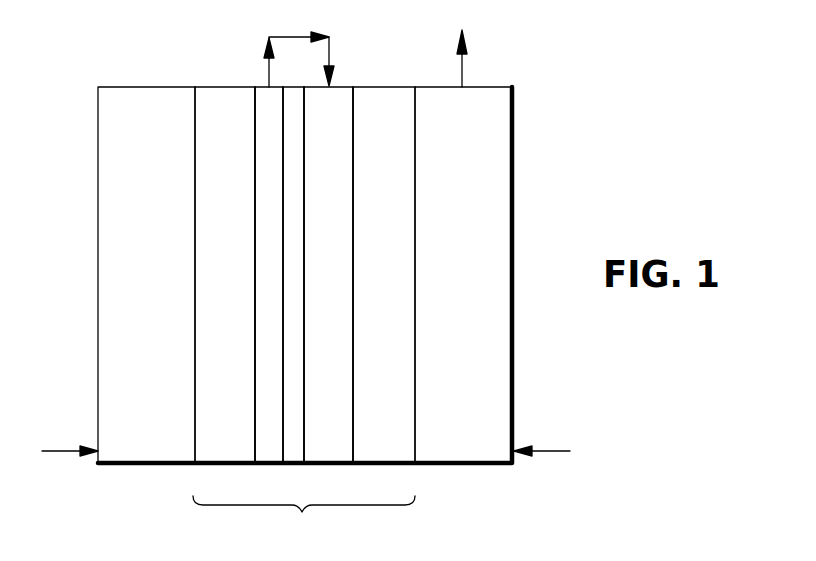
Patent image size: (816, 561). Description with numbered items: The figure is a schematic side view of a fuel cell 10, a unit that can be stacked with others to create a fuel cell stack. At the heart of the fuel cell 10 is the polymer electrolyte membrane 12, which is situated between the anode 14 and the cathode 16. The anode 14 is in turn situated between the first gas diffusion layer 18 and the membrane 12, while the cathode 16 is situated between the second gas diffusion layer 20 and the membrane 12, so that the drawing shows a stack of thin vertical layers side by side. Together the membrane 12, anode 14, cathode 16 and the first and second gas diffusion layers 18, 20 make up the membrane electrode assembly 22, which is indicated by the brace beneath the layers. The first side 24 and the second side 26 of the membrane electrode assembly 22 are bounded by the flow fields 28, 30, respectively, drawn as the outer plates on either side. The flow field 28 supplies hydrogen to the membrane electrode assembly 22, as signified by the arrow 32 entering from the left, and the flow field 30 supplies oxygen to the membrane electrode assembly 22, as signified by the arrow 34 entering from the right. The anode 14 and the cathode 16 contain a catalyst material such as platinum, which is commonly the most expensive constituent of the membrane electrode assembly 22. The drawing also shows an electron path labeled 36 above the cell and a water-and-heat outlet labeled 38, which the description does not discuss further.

The fuel cell 10 is at (563, 218).
The polymer electrolyte membrane 12 is at (288, 86).
The anode 14 is at (268, 467).
The cathode 16 is at (328, 467).
The first gas diffusion layer 18 is at (224, 86).
The second gas diffusion layer 20 is at (385, 86).
The membrane electrode assembly 22 is at (304, 519).
The first side 24 is at (195, 86).
The second side 26 is at (415, 86).
The flow field 28 is at (132, 86).
The flow field 30 is at (497, 86).
The arrow 32 is at (63, 450).
The arrow 34 is at (548, 451).
The external electrical circuit (electron flow) 36 is at (268, 70).
The water and heat outlet flow 38 is at (465, 77).